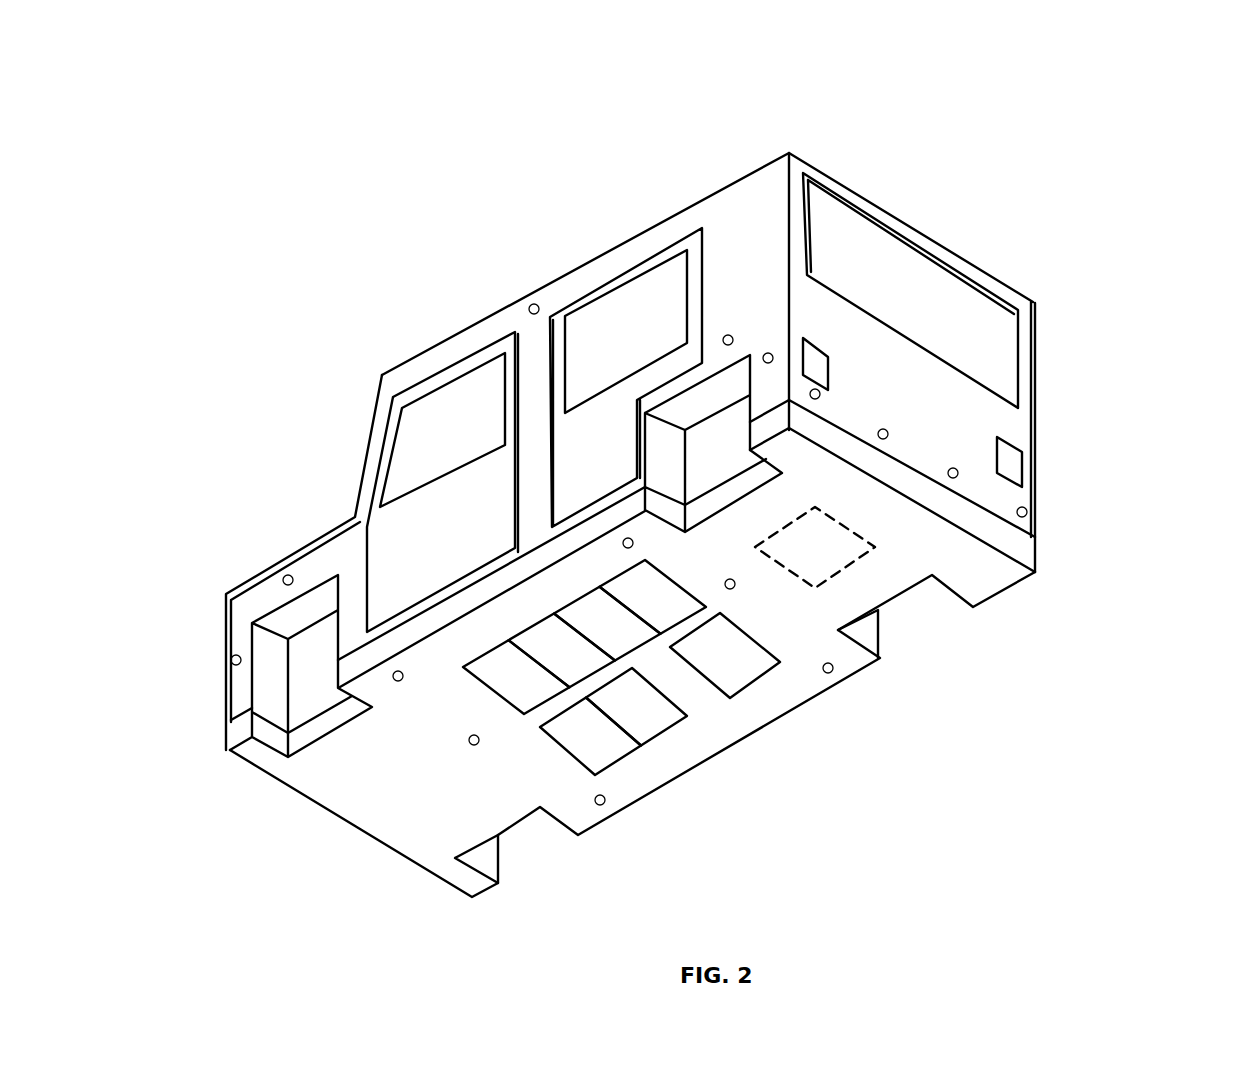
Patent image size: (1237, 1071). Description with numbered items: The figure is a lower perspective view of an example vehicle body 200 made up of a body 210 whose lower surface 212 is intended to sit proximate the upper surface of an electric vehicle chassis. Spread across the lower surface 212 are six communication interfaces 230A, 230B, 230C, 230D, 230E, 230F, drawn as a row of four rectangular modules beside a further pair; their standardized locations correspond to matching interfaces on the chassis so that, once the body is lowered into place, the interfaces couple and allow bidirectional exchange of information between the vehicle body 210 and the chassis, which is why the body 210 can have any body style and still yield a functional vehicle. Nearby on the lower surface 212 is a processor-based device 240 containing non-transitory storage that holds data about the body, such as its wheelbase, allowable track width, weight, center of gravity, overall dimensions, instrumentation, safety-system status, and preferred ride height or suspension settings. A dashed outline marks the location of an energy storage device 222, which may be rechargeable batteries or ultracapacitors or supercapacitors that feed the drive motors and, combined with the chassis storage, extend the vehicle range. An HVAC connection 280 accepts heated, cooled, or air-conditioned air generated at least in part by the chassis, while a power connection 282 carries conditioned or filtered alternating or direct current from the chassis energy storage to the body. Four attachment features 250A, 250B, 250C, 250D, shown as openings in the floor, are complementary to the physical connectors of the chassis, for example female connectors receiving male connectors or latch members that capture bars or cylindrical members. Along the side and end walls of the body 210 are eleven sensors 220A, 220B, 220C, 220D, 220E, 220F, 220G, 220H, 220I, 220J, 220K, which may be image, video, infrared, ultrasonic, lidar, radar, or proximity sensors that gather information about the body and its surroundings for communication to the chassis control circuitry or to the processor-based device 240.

The vehicle body 200 is at (1153, 97).
The body 210 is at (623, 242).
The lower surface 212 is at (395, 810).
The sensor 220A is at (231, 660).
The sensor 220B is at (283, 580).
The sensor 220C is at (529, 308).
The sensor 220D is at (728, 335).
The sensor 220E is at (767, 353).
The sensor 220F is at (830, 350).
The sensor 220G is at (821, 394).
The sensor 220H is at (889, 434).
The sensor 220I is at (959, 473).
The sensor 220J is at (1028, 512).
The sensor 220K is at (1024, 452).
The energy storage device 222 is at (815, 547).
The communication interface 230A is at (516, 677).
The communication interface 230B is at (562, 651).
The communication interface 230C is at (607, 624).
The communication interface 230D is at (653, 597).
The communication interface 230E is at (590, 737).
The communication interface 230F is at (636, 707).
The processor-based device 240 is at (725, 655).
The attachment feature 250A is at (403, 675).
The attachment feature 250B is at (605, 797).
The attachment feature 250C is at (824, 670).
The attachment feature 250D is at (624, 546).
The HVAC connection 280 is at (479, 741).
The power connection 282 is at (735, 585).